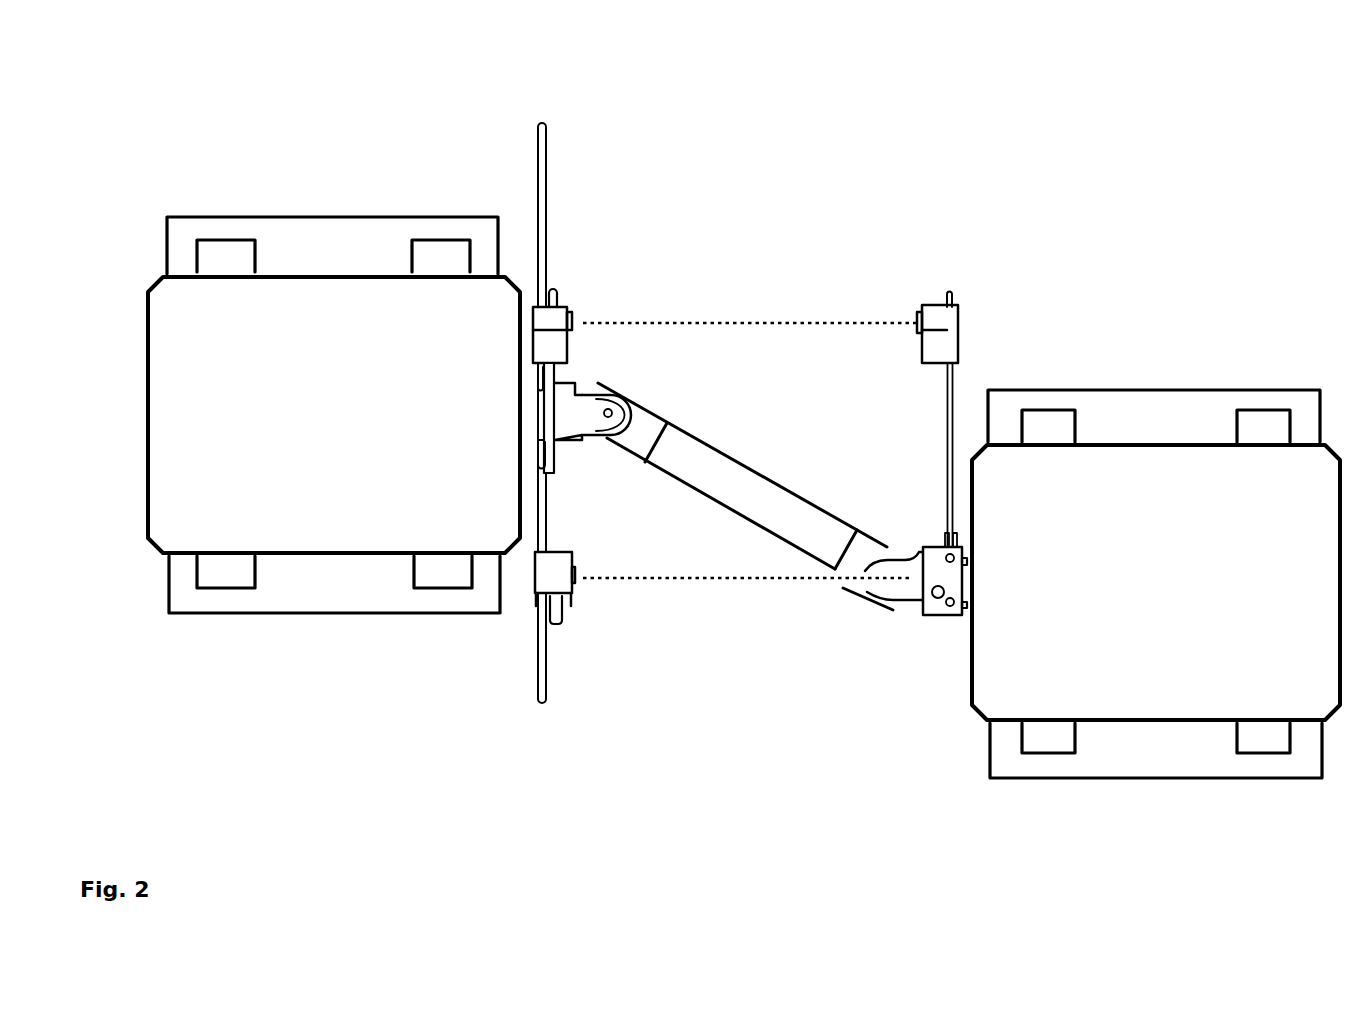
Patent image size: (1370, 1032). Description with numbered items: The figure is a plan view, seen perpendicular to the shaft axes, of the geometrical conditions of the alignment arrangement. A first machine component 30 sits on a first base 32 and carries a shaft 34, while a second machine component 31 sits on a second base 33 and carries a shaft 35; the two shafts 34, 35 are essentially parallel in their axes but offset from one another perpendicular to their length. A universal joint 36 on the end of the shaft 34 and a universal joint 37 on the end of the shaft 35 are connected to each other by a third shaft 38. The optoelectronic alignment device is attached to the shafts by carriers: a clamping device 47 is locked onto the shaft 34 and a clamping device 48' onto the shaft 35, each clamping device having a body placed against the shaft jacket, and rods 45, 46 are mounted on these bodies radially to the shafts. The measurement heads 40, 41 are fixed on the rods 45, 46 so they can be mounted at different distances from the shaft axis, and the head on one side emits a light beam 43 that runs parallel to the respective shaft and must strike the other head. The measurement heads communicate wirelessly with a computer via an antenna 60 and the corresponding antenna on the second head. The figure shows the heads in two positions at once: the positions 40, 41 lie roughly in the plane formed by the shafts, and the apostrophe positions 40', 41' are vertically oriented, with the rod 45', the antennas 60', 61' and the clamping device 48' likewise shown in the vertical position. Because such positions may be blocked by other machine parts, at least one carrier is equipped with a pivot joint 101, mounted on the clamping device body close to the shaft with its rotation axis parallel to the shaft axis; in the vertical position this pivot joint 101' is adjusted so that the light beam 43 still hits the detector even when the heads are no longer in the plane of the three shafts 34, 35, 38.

The first machine component 30 is at (320, 295).
The second machine component 31 is at (1303, 480).
The first base 32 is at (329, 592).
The second base 33 is at (1144, 759).
The shaft 34 is at (523, 403).
The shaft 35 is at (968, 590).
The universal joint 36 is at (585, 405).
The universal joint 37 is at (905, 573).
The third shaft 38 is at (740, 487).
The measurement head 40 is at (502, 213).
The measurement head 40' is at (614, 631).
The measurement head 41 is at (974, 213).
The measurement head 41' is at (1022, 429).
The light beam 43 is at (663, 323).
The rod 45 is at (521, 251).
The rod 45' is at (496, 575).
The rod 46 is at (952, 400).
The clamping device 47 is at (540, 417).
The clamping device 48' is at (931, 622).
The antenna 60 is at (585, 185).
The antenna 60' is at (585, 653).
The antenna 61' is at (895, 648).
The pivot joint 101 is at (636, 249).
The pivot joint 101' is at (653, 576).